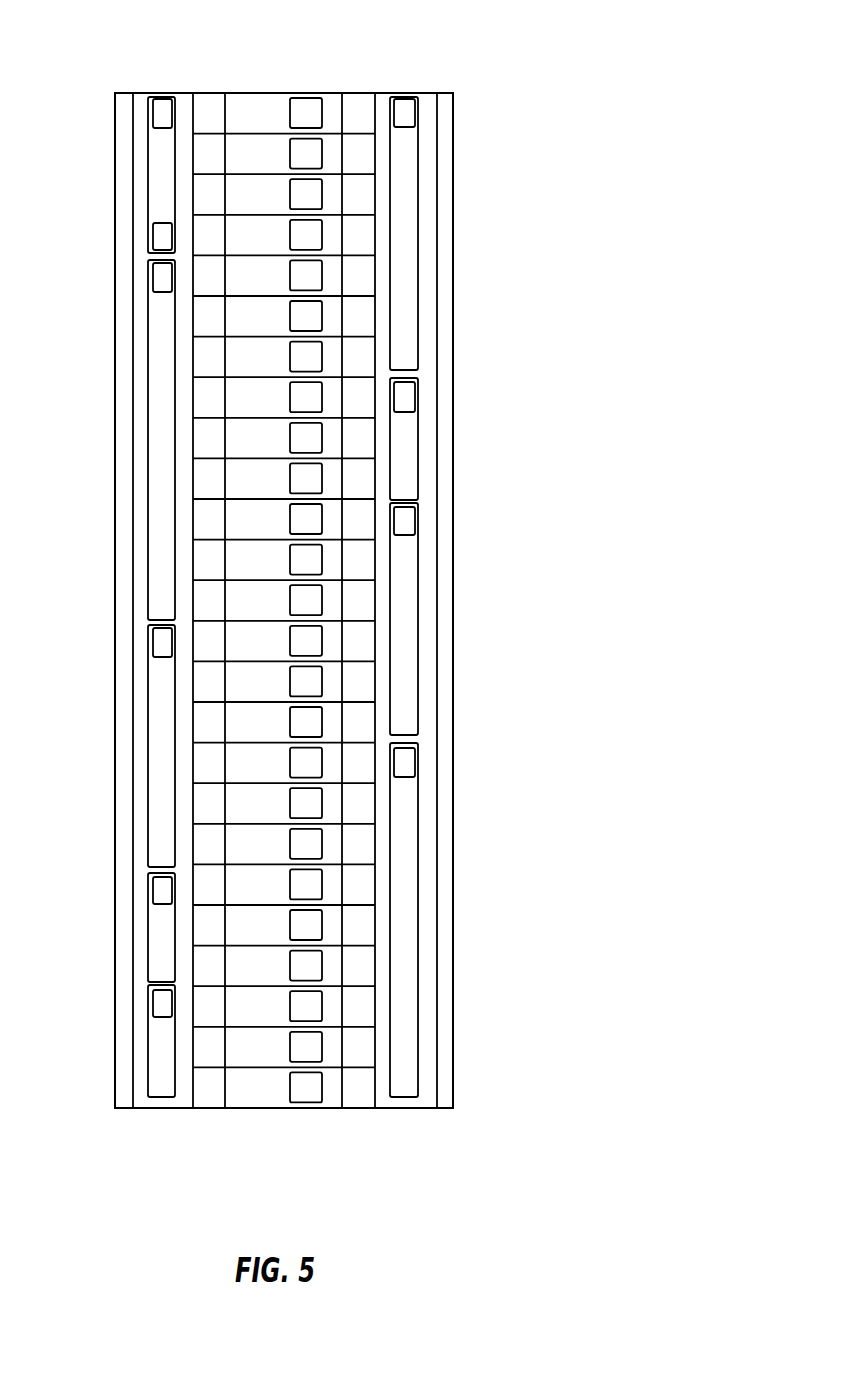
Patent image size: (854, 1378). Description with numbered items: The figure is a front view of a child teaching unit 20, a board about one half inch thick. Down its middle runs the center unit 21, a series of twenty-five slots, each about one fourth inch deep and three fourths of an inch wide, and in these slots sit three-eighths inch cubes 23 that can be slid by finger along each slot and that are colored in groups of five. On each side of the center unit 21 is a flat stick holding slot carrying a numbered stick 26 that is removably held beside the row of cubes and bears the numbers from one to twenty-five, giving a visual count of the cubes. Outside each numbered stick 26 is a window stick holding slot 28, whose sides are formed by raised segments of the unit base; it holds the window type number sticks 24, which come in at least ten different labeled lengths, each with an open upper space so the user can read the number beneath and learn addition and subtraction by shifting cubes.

The child teaching unit 20 is at (115, 127).
The center unit 21 is at (270, 92).
The cubes 23 is at (303, 92).
The window type number sticks 24 is at (282, 597).
The numbered stick 26 is at (207, 92).
The window stick holding slot 28 is at (140, 100).